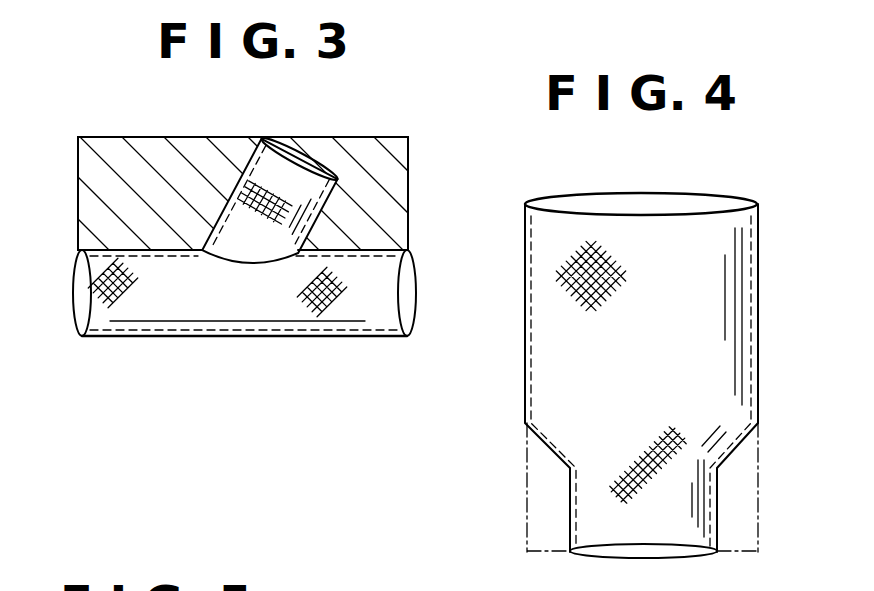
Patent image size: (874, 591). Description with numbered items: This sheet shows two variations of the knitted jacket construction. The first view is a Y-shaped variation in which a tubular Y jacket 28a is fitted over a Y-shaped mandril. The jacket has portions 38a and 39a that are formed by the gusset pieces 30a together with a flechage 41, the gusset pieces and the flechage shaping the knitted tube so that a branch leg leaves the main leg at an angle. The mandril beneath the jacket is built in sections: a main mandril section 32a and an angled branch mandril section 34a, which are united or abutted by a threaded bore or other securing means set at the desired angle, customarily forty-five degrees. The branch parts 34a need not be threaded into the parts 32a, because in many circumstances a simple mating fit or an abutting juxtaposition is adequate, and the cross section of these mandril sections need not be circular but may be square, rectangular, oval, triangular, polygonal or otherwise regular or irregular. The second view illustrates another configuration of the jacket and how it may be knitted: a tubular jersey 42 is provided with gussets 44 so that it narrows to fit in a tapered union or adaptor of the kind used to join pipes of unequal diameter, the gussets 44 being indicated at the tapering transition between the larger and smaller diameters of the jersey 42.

In FIG. 3, the tubular Y jacket 28a is at (373, 315).
In FIG. 3, the gusset pieces 30a is at (377, 165).
In FIG. 3, the mandril section 32a is at (77, 303).
In FIG. 3, the mandril section 34a is at (300, 158).
In FIG. 3, the portion of tubular Y jacket 38a is at (243, 313).
In FIG. 3, the portion of tubular Y jacket 39a is at (253, 180).
In FIG. 3, the flechage 41 is at (232, 240).
In FIG. 4, the tubular jersey 42 is at (742, 265).
In FIG. 4, the gussets 44 is at (543, 515).